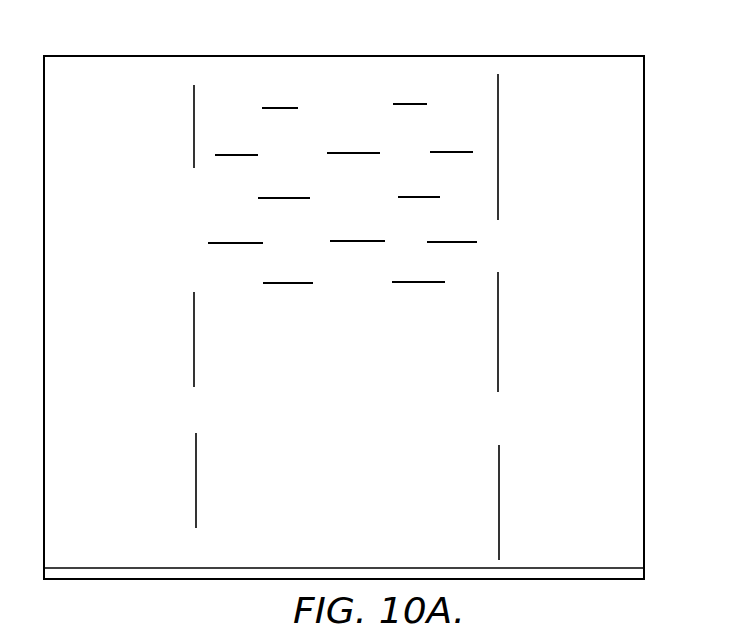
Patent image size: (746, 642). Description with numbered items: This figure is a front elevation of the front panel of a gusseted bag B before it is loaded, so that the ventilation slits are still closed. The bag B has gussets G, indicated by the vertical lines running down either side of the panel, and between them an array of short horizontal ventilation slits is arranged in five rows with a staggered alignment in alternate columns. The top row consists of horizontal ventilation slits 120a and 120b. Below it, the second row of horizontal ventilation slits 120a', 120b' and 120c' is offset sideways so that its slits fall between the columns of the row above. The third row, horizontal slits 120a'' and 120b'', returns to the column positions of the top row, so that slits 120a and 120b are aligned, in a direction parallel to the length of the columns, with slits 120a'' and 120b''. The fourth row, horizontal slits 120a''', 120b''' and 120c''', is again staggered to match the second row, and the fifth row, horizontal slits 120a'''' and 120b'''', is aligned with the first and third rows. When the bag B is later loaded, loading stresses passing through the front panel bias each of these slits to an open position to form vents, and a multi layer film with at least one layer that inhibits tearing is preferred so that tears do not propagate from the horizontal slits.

The horizontal ventilation slit 120a is at (267, 61).
The horizontal ventilation slit 120b is at (440, 58).
The horizontal ventilation slit 120a' is at (177, 137).
The horizontal ventilation slit 120b' is at (343, 131).
The horizontal ventilation slit 120c' is at (509, 133).
The horizontal ventilation slit 120a'' is at (202, 187).
The horizontal ventilation slit 120b'' is at (495, 185).
The horizontal ventilation slit 120b''' is at (357, 211).
The horizontal ventilation slit 120a''' is at (174, 230).
The horizontal ventilation slit 120c''' is at (514, 230).
The horizontal ventilation slit 120a'''' is at (260, 313).
The horizontal ventilation slit 120b'''' is at (454, 312).
The gussets G is at (197, 467).
The bag B is at (647, 262).